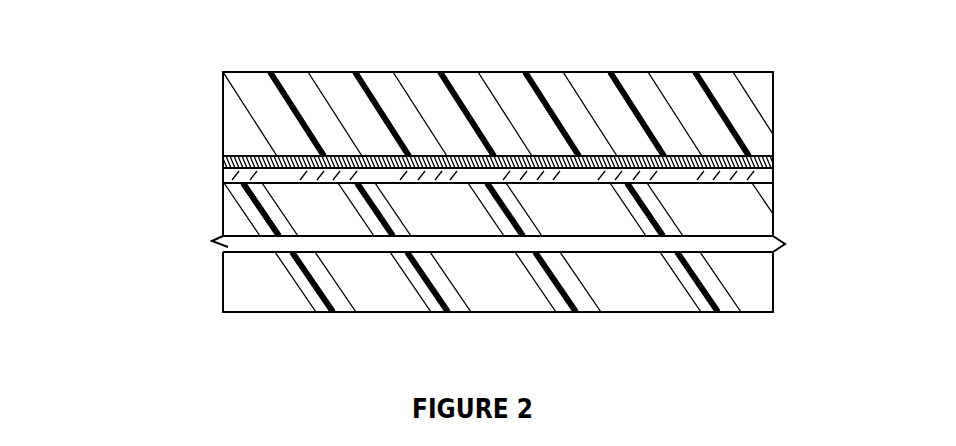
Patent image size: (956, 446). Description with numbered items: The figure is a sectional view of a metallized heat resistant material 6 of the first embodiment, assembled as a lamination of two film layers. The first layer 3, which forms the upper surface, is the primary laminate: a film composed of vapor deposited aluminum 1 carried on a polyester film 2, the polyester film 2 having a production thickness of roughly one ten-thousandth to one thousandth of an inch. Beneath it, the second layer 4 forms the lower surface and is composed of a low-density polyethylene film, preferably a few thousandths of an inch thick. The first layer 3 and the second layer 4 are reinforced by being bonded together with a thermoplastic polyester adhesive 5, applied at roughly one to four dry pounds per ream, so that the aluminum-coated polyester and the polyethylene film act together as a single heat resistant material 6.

The vapor deposited aluminum 1 is at (773, 165).
The polyester film 2 is at (773, 109).
The first layer 3 is at (487, 114).
The second layer 4 is at (773, 220).
The thermoplastic polyester adhesive 5 is at (773, 180).
The metallized heat resistant material 6 is at (449, 184).